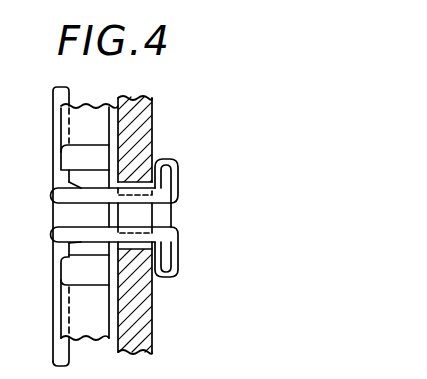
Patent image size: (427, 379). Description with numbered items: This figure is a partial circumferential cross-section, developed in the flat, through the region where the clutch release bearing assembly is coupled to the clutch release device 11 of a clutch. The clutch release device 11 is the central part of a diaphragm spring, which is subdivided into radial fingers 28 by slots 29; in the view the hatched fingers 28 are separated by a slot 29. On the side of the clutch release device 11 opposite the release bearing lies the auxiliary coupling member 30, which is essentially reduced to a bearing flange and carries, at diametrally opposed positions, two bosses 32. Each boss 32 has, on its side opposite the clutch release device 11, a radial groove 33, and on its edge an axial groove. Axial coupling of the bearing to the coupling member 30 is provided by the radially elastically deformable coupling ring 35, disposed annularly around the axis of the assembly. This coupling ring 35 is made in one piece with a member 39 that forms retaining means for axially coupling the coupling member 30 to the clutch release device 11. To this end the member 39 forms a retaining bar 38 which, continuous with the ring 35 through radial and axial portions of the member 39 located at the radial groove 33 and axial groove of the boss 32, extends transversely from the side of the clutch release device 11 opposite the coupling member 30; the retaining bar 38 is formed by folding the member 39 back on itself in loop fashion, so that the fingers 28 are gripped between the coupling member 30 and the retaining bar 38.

The clutch release device 11 is at (157, 113).
The radial fingers 28 is at (147, 137).
The slots 29 is at (127, 177).
The coupling member 30 is at (52, 313).
The bosses 32 is at (64, 150).
The radial groove 33 is at (60, 186).
The coupling ring 35 is at (58, 178).
The retaining bar 38 is at (165, 217).
The member forming retaining means 39 is at (182, 176).